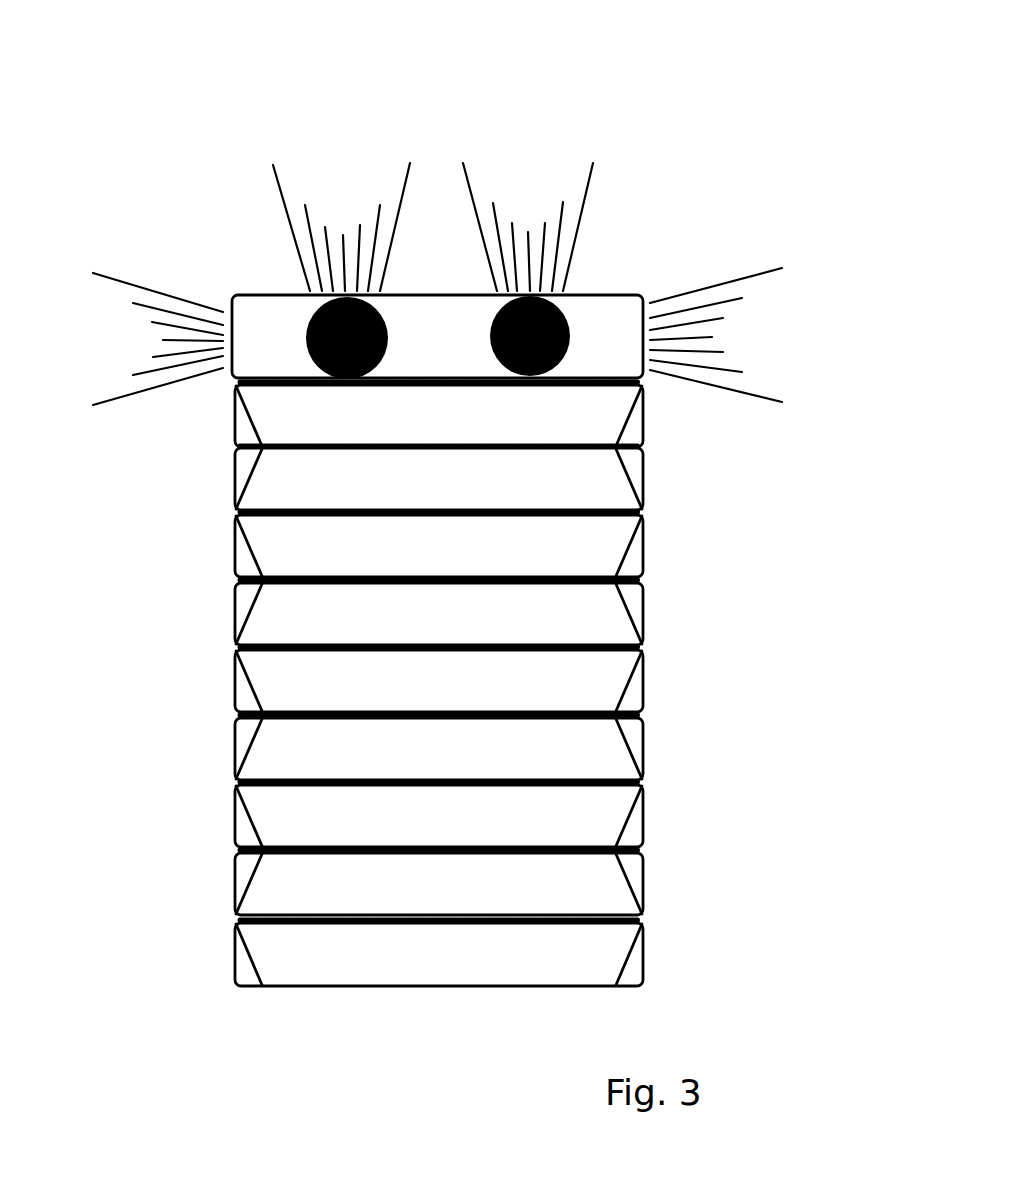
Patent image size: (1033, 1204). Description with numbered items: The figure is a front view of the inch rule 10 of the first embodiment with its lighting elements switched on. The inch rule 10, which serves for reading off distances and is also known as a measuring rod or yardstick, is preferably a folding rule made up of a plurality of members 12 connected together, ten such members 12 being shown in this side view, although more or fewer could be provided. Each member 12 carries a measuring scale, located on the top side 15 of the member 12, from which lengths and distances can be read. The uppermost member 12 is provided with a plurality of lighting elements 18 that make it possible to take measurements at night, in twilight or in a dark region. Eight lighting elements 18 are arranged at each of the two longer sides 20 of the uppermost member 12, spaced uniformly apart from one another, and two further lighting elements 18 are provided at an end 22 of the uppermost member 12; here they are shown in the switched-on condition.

The inch rule 10 is at (208, 114).
The members 12 is at (248, 963).
The top side 15 is at (442, 280).
The lighting elements 18 is at (322, 304).
The longer sides 20 is at (647, 379).
The end 22 is at (255, 318).